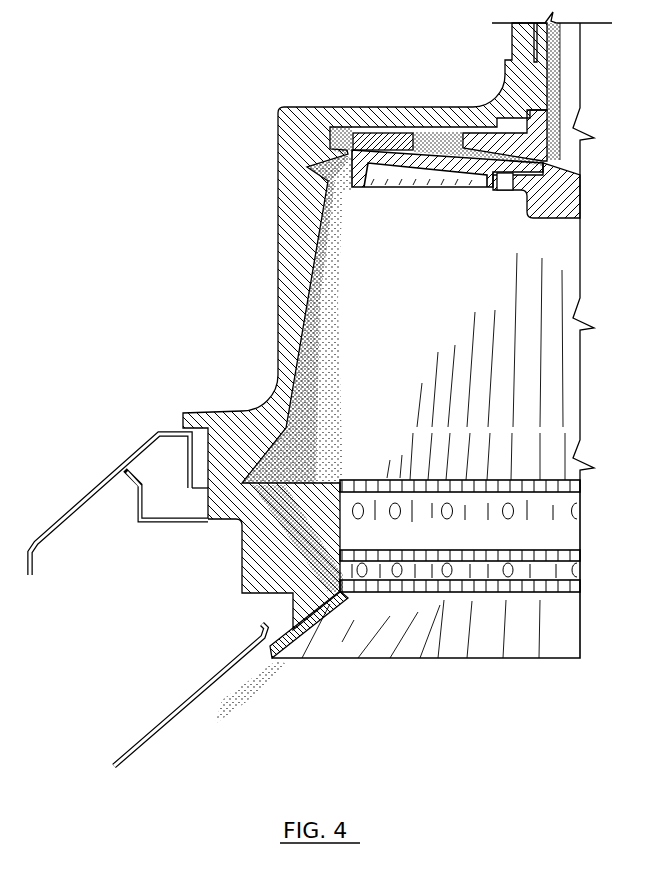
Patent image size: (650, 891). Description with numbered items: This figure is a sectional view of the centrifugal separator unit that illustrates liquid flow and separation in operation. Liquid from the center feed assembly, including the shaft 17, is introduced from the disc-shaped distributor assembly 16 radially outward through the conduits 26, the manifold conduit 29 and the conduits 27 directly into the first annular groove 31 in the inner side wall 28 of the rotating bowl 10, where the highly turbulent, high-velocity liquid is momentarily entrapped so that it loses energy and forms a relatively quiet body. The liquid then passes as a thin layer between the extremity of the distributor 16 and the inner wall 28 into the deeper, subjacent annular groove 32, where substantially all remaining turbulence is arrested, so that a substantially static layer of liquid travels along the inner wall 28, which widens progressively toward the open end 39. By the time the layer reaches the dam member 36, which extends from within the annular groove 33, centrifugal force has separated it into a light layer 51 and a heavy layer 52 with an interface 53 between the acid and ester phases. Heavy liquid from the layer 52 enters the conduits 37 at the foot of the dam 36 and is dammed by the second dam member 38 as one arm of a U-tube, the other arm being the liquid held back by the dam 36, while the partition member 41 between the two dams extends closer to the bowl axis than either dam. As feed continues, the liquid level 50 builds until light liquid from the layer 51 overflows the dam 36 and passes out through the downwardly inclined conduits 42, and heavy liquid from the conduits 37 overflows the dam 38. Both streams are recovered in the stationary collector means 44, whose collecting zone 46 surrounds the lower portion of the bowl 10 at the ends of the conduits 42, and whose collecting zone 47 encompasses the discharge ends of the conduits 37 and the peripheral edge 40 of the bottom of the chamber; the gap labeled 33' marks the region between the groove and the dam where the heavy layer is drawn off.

The bowl 10 is at (570, 250).
The distributor assembly 16 is at (573, 198).
The shaft 17 is at (572, 85).
The conduits 26 is at (507, 153).
The conduits 27 is at (373, 133).
The inner side walls 28 is at (293, 232).
The conduit 29 is at (438, 143).
The annular groove 31 is at (331, 148).
The annular groove 32 is at (308, 152).
The annular groove 33 is at (185, 508).
The seal ring gap 33' is at (263, 485).
The dam member 36 is at (341, 484).
The conduits 37 is at (290, 528).
The dam member 38 is at (338, 590).
The open end 39 is at (508, 650).
The peripheral edge 40 is at (298, 630).
The partition member 41 is at (353, 552).
The conduits 42 is at (330, 521).
The collector means 44 is at (82, 489).
The collecting zone 46 is at (107, 628).
The collecting zone 47 is at (460, 768).
The liquid level 50 is at (350, 299).
The light layer 51 is at (333, 386).
The heavy layer 52 is at (302, 397).
The interface 53 is at (332, 355).